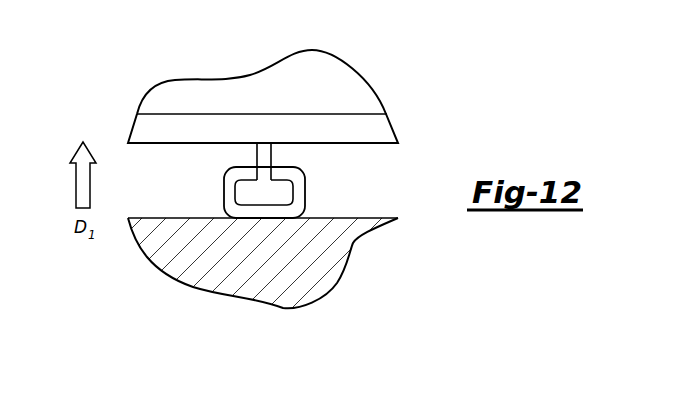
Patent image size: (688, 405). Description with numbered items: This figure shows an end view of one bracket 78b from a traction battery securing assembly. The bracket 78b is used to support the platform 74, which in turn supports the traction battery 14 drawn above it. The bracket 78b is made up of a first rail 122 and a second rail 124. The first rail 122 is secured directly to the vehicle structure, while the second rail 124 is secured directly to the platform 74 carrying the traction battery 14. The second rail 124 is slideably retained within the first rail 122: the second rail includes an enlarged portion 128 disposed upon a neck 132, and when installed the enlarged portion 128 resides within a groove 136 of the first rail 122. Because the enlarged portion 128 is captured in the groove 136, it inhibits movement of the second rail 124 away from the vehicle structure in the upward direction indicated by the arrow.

The traction battery 14 is at (318, 75).
The platform 74 is at (373, 127).
The neck 132 is at (256, 151).
The second rail 124 is at (272, 151).
The first rail 122 is at (305, 198).
The bracket 78b is at (227, 200).
The enlarged portion 128 is at (260, 193).
The groove 136 is at (292, 190).